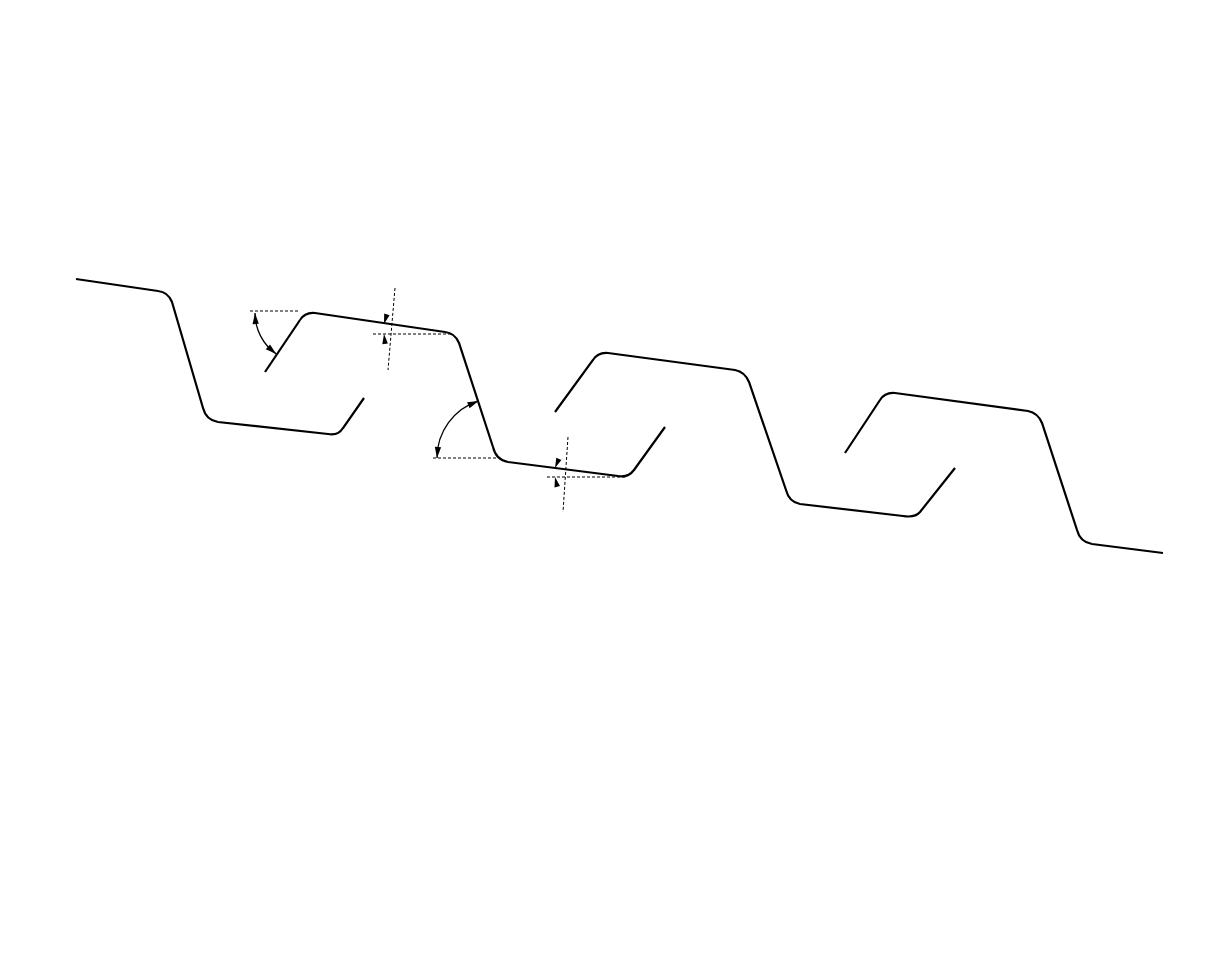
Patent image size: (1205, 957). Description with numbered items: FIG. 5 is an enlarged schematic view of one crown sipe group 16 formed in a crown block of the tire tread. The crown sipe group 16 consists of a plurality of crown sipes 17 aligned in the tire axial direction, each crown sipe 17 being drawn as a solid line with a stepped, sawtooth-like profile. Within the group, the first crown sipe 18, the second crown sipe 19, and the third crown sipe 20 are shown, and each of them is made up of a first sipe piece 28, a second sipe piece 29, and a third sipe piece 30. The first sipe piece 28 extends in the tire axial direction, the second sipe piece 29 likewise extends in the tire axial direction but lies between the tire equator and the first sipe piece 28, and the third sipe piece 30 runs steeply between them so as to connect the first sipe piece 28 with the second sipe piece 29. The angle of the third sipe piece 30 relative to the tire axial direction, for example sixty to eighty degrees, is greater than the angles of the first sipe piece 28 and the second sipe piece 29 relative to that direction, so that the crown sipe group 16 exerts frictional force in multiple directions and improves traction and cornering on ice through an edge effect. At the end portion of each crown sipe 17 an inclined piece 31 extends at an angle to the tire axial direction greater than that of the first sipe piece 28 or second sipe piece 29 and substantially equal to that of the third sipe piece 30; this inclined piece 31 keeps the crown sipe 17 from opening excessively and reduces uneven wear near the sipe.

The crown sipe group 16 is at (208, 167).
The crown sipe 17 is at (515, 635).
The first crown sipe 18 is at (338, 438).
The second crown sipe 19 is at (1063, 487).
The third crown sipe 20 is at (657, 447).
The first sipe piece 28 is at (335, 313).
The second sipe piece 29 is at (527, 462).
The third sipe piece 30 is at (470, 362).
The inclined piece 31 is at (277, 368).